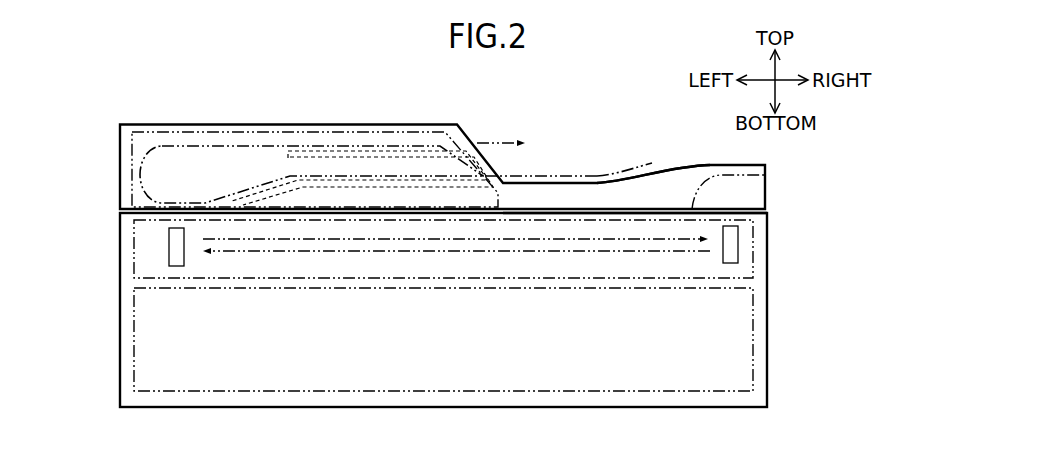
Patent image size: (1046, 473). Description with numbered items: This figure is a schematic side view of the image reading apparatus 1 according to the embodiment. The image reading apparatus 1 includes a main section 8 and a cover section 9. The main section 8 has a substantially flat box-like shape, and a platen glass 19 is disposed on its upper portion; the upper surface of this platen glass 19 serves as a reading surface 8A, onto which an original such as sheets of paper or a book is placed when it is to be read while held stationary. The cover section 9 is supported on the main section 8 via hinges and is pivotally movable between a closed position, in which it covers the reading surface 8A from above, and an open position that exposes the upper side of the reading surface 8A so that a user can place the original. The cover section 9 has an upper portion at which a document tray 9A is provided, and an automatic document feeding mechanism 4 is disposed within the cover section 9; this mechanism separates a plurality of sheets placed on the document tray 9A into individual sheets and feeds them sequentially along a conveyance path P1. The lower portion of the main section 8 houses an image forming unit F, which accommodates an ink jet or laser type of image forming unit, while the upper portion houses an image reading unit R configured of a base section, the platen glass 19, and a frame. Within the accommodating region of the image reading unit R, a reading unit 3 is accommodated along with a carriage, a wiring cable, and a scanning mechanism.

The image reading apparatus 1 is at (375, 78).
The reading unit 3 is at (178, 250).
The automatic document feeding mechanism 4 is at (186, 126).
The main section 8 is at (773, 328).
The reading surface 8A is at (602, 209).
The cover section 9 is at (770, 199).
The document tray 9A is at (665, 172).
The platen glass 19 is at (766, 175).
The conveyance path P1 is at (262, 143).
The image reading unit R is at (760, 262).
The image forming unit F is at (760, 367).